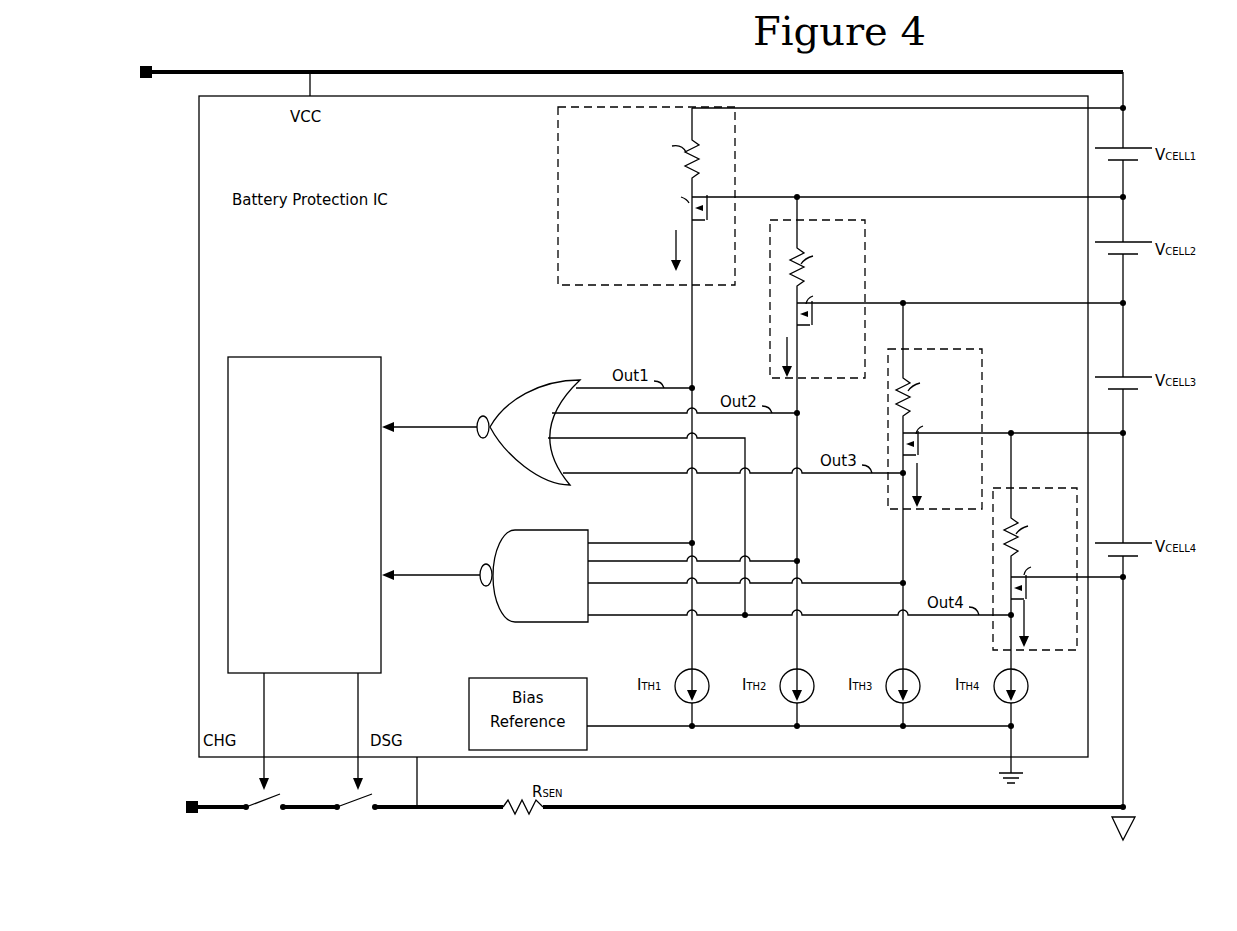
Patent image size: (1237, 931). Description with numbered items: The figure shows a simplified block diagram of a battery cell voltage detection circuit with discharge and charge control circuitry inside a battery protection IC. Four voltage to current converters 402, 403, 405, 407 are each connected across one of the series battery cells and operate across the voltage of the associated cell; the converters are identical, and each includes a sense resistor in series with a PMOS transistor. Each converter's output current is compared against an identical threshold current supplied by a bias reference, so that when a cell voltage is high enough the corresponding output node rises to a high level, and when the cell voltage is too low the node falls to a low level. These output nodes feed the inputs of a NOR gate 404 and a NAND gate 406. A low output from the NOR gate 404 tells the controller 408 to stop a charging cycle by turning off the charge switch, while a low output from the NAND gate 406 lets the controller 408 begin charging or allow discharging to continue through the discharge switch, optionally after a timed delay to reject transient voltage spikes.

The voltage to current converter 402 is at (558, 165).
The voltage to current converter 403 is at (865, 265).
The NOR gate 404 is at (544, 388).
The voltage to current converter 405 is at (982, 402).
The NAND gate 406 is at (556, 530).
The voltage to current converter 407 is at (1027, 488).
The controller 408 is at (321, 355).